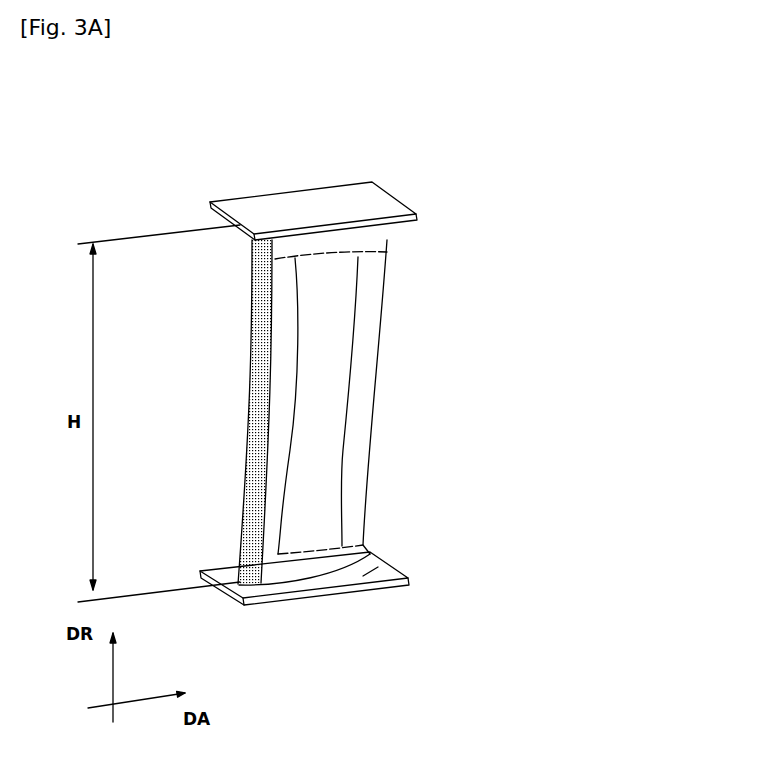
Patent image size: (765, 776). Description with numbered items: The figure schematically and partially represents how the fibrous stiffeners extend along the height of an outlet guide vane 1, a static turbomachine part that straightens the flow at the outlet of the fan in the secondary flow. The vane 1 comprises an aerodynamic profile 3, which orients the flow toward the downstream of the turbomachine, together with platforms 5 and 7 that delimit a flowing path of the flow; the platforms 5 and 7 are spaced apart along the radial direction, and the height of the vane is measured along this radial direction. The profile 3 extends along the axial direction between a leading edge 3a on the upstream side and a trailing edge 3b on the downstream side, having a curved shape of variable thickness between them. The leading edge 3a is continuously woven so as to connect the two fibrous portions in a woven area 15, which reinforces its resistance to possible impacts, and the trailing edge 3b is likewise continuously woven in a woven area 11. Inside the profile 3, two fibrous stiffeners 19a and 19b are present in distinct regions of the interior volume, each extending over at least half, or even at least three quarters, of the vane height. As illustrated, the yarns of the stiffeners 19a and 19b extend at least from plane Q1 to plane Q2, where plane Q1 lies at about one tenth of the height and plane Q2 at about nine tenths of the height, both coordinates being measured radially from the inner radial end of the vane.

The outlet guide vane 1 is at (315, 359).
The aerodynamic profile 3 is at (322, 412).
The leading edge 3a is at (250, 500).
The trailing edge 3b is at (368, 470).
The platform 5 is at (343, 203).
The platform 7 is at (407, 574).
The woven area 11 is at (323, 401).
The woven area 15 is at (250, 357).
The fibrous stiffener 19a is at (282, 304).
The fibrous stiffener 19b is at (360, 413).
The plane Q1 is at (367, 550).
The plane Q2 is at (370, 250).